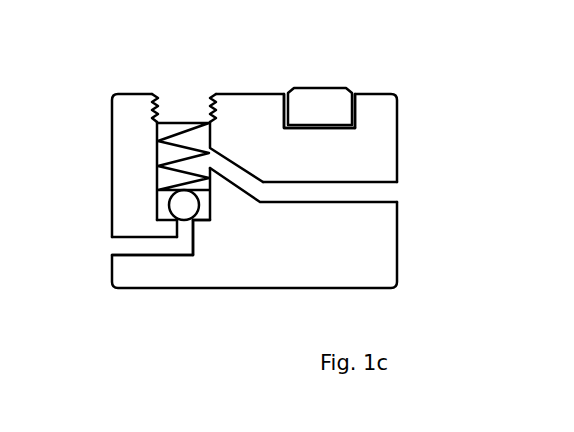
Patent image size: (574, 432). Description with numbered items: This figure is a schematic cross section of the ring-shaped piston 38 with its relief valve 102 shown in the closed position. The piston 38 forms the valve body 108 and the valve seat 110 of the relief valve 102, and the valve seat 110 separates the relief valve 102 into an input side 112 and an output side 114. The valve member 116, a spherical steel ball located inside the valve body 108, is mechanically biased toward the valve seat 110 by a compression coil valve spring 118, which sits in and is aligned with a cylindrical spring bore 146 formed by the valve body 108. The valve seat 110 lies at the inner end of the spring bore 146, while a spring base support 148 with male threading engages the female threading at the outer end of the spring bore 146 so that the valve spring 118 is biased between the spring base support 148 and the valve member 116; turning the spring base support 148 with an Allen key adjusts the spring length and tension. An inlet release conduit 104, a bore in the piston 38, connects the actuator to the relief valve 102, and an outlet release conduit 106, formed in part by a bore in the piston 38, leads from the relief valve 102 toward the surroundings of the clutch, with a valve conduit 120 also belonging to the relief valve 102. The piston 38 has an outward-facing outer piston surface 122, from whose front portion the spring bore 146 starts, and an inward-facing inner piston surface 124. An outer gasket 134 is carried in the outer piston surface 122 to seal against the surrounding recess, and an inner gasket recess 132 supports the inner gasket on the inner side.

The piston 38 is at (382, 132).
The relief valve 102 is at (153, 185).
The inlet release conduit 104 is at (390, 192).
The outlet release conduit 106 is at (117, 245).
The valve body 108 is at (155, 159).
The valve seat 110 is at (200, 225).
The input side 112 is at (217, 155).
The output side 114 is at (175, 247).
The valve member 116 is at (182, 223).
The valve spring 118 is at (190, 143).
The valve conduit 120 is at (318, 208).
The outer piston surface 122 is at (278, 103).
The inner piston surface 124 is at (312, 288).
The inner gasket recess 132 is at (350, 108).
The outer gasket 134 is at (312, 97).
The spring bore 146 is at (153, 130).
The spring base support 148 is at (178, 98).